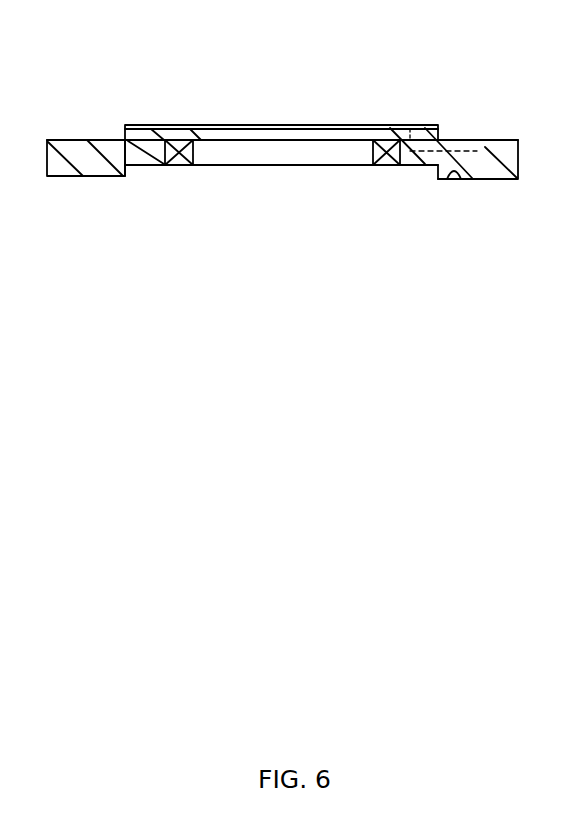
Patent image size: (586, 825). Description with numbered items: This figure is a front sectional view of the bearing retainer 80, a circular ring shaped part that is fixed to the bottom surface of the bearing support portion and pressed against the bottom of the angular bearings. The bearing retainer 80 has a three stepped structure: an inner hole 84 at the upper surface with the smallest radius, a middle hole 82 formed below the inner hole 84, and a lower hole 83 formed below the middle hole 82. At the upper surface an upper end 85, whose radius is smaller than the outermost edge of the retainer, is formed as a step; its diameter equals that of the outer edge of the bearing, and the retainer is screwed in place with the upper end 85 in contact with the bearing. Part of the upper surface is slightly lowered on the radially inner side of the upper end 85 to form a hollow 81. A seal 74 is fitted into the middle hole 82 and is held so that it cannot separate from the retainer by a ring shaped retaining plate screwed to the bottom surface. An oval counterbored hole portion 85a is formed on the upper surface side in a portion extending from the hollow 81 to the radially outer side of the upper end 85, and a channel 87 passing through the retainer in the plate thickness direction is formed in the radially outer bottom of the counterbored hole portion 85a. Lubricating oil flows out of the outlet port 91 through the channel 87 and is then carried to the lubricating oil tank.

The seal 74 is at (383, 167).
The bearing retainer 80 is at (463, 188).
The hollow 81 is at (419, 127).
The middle hole 82 is at (172, 166).
The lower hole 83 is at (127, 175).
The inner hole 84 is at (202, 125).
The upper end 85 is at (123, 133).
The counterbored hole portion 85a is at (413, 127).
The channel 87 is at (457, 150).
The outlet port 91 is at (455, 180).